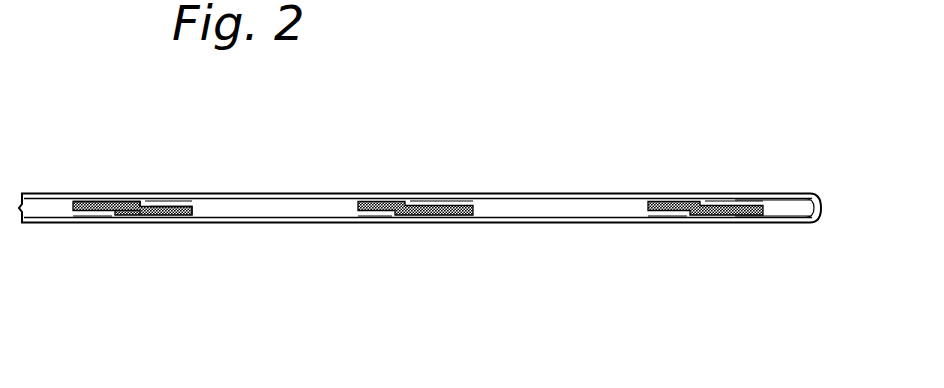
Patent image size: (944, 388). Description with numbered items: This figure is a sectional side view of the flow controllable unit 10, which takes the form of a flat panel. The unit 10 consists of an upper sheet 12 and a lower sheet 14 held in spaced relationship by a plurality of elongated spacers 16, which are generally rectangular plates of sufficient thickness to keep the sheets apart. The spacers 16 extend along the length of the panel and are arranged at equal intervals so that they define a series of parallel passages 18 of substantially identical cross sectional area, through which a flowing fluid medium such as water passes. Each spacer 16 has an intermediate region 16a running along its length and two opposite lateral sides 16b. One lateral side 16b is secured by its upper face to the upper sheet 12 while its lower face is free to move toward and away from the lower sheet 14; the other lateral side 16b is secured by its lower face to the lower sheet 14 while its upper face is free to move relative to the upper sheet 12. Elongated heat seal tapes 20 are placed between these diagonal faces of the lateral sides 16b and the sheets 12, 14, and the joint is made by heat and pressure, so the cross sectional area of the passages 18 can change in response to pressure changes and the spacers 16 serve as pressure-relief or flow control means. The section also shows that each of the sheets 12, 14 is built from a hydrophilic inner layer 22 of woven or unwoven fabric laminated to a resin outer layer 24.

The flow controllable unit 10 is at (520, 108).
The upper sheet 12 is at (614, 195).
The lower sheet 14 is at (262, 221).
The spacer 16 is at (116, 198).
The intermediate region 16a is at (128, 216).
The lateral side 16b is at (86, 198).
The passage 18 is at (282, 195).
The heat seal tape 20 is at (178, 198).
The hydrophilic inner layer 22 is at (811, 193).
The outer layer 24 is at (766, 197).